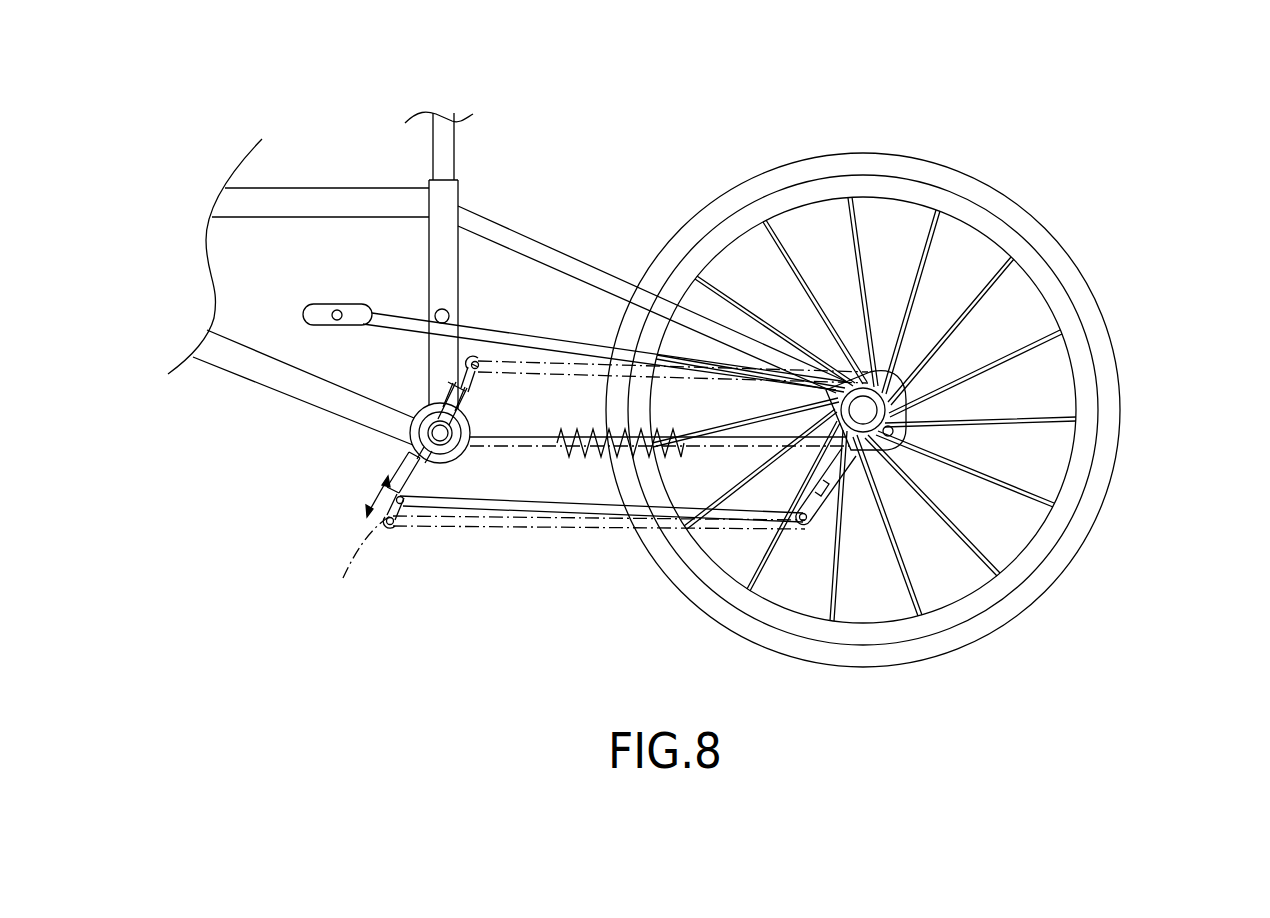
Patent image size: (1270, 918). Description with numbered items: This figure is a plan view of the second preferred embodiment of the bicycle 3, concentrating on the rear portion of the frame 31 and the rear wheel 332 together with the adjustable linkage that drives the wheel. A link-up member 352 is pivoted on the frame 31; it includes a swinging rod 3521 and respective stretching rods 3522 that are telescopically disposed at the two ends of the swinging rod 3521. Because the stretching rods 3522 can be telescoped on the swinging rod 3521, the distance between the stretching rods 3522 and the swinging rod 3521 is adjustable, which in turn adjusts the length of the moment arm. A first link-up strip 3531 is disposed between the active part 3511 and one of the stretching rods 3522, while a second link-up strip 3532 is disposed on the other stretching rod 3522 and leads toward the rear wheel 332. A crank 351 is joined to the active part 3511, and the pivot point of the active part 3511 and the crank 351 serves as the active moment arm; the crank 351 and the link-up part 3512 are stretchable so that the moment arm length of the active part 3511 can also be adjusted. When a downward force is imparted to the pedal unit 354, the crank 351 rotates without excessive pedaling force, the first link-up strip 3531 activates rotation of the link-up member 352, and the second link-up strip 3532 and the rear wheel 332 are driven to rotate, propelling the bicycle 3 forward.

The bicycle 3 is at (151, 136).
The frame 31 is at (333, 203).
The rear wheel 332 is at (1105, 356).
The crank 351 is at (852, 466).
The active part 3511 is at (518, 340).
The link-up part 3512 is at (855, 466).
The link-up member 352 is at (409, 433).
The swinging rod 3521 is at (408, 447).
The stretching rod 3522 is at (356, 563).
The first link-up strip 3531 is at (563, 507).
The second link-up strip 3532 is at (572, 367).
The pedal unit 354 is at (315, 313).